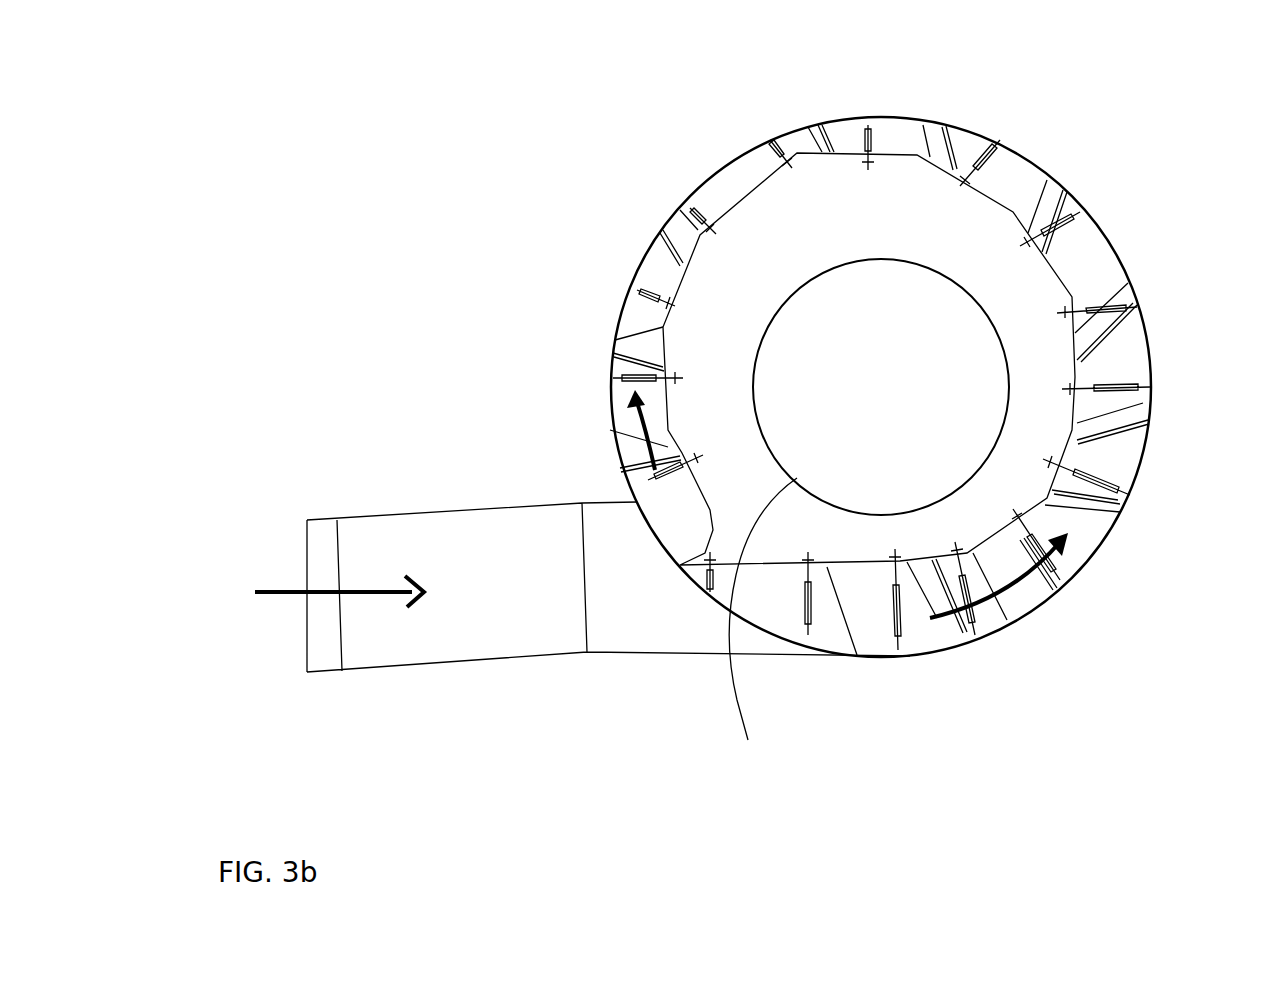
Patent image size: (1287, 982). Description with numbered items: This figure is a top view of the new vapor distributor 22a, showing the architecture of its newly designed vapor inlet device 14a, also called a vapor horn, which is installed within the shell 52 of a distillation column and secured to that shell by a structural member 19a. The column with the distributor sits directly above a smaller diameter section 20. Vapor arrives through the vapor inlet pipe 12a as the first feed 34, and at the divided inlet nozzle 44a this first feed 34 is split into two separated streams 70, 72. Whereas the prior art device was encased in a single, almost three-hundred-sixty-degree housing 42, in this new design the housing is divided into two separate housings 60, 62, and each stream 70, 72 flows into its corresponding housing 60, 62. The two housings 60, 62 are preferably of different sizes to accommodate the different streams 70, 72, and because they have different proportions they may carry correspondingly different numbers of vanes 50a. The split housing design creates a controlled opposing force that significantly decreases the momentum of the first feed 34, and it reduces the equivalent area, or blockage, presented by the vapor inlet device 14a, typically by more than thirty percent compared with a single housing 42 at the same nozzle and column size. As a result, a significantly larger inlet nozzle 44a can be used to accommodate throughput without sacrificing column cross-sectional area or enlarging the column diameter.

The vapor distributor 22a is at (516, 231).
The shell 52 is at (745, 155).
The housing 60 is at (1122, 460).
The housing 42 is at (1020, 178).
The structural member 19a is at (1097, 480).
The housing 62 is at (633, 311).
The stream 72 is at (617, 435).
The stream 70 is at (935, 618).
The vapor inlet pipe 12a is at (437, 672).
The first feed 34 is at (258, 590).
The inlet 44a is at (635, 602).
The smaller diameter section 20 is at (748, 740).
The vapor inlet device 14a is at (873, 648).
The vanes 50a is at (1090, 555).